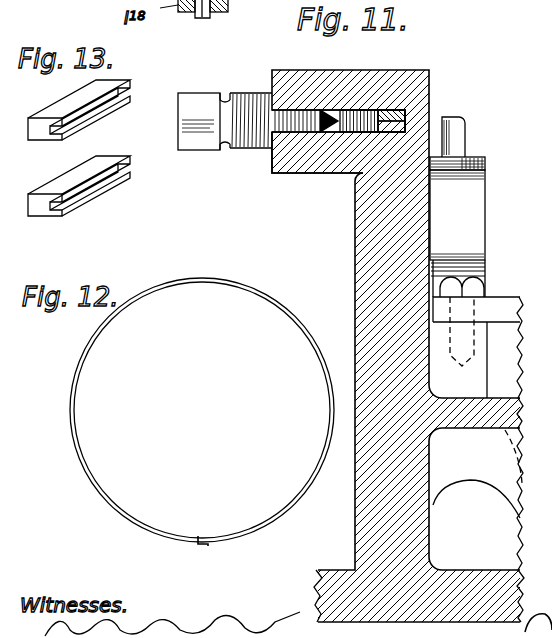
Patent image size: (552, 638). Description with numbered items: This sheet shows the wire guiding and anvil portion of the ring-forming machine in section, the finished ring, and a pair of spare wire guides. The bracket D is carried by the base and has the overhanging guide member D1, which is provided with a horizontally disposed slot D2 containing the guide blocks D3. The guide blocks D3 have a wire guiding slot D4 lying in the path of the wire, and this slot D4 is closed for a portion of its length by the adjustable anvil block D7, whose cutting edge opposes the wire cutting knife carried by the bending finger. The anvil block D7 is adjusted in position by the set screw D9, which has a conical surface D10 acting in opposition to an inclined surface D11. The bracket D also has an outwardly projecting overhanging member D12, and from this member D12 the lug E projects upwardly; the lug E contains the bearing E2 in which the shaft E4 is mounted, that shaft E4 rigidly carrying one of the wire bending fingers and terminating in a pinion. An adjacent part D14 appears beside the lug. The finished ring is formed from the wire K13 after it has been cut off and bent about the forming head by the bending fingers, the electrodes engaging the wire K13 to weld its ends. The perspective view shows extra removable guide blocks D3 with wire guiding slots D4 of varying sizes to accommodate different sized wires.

In FIG. 11, the bracket D is at (367, 263).
In FIG. 11, the overhanging guide member D1 is at (303, 163).
In FIG. 11, the horizontally disposed slot D2 is at (367, 113).
In FIG. 11, the guide blocks D3 is at (395, 113).
In FIG. 13, the guide blocks D3 is at (55, 152).
In FIG. 11, the wire guiding slot D4 is at (410, 113).
In FIG. 13, the wire guiding slot D4 is at (90, 187).
In FIG. 11, the adjustable anvil block D7 is at (348, 118).
In FIG. 11, the set screw D9 is at (246, 151).
In FIG. 11, the conical surface D10 is at (331, 137).
In FIG. 11, the inclined surface D11 is at (512, 347).
In FIG. 11, the outwardly projecting overhanging member D12 is at (505, 495).
In FIG. 11, the flange D14 is at (498, 299).
In FIG. 11, the lug E is at (471, 218).
In FIG. 11, the bearing E2 is at (465, 160).
In FIG. 11, the shaft E4 is at (456, 131).
In FIG. 12, the wire K13 is at (203, 536).